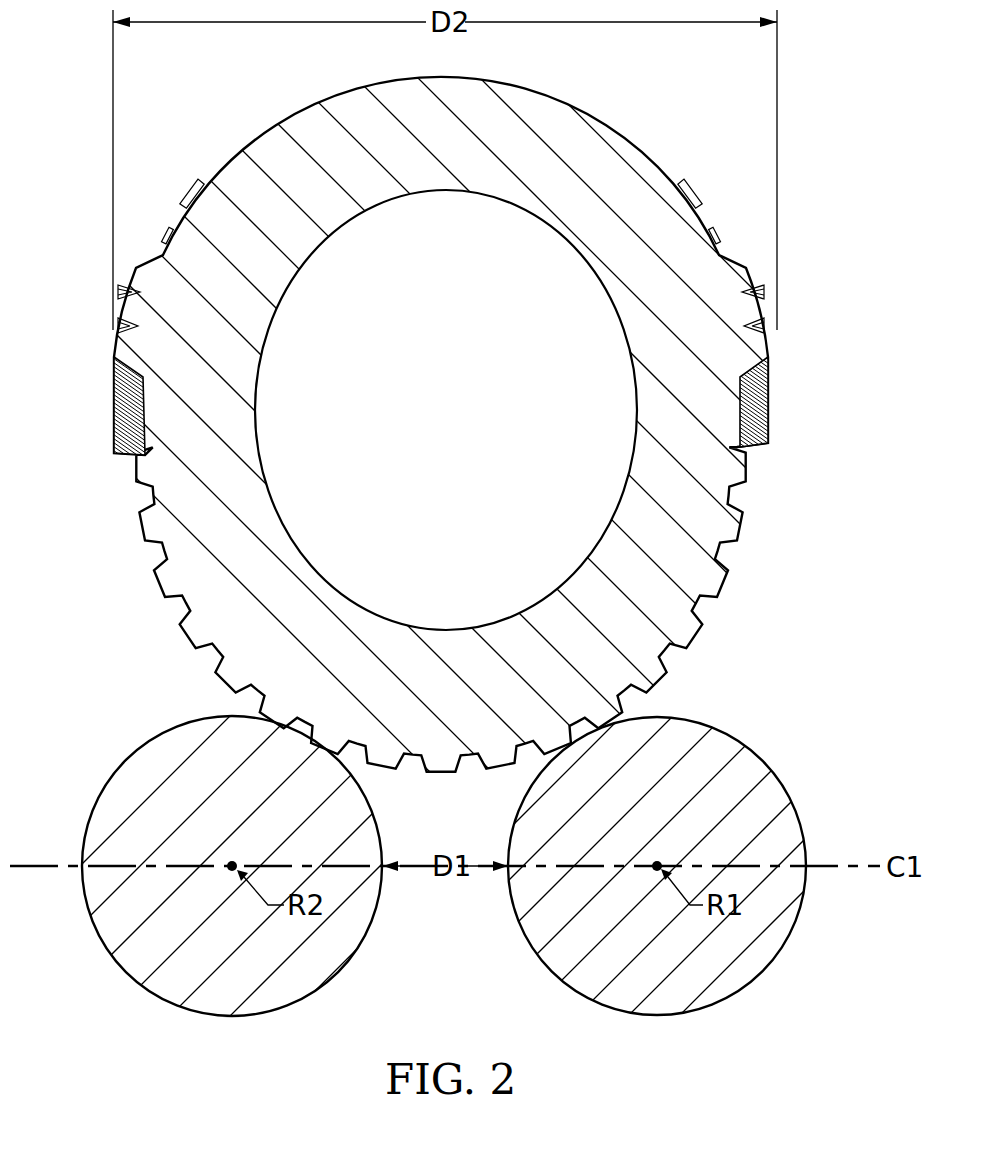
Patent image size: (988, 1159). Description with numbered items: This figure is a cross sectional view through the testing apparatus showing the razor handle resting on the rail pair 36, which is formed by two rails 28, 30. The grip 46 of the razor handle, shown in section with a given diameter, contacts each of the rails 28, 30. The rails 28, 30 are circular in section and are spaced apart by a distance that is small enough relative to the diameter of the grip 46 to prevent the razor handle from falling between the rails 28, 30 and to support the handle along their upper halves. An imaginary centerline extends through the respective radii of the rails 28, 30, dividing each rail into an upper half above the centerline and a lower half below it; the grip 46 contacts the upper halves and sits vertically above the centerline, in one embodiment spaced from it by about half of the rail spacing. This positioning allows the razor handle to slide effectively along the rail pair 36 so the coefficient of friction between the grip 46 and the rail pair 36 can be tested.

The grip 46 is at (300, 111).
The rail 30 is at (160, 1000).
The rail 28 is at (745, 988).
The rail pair 36 is at (676, 1066).